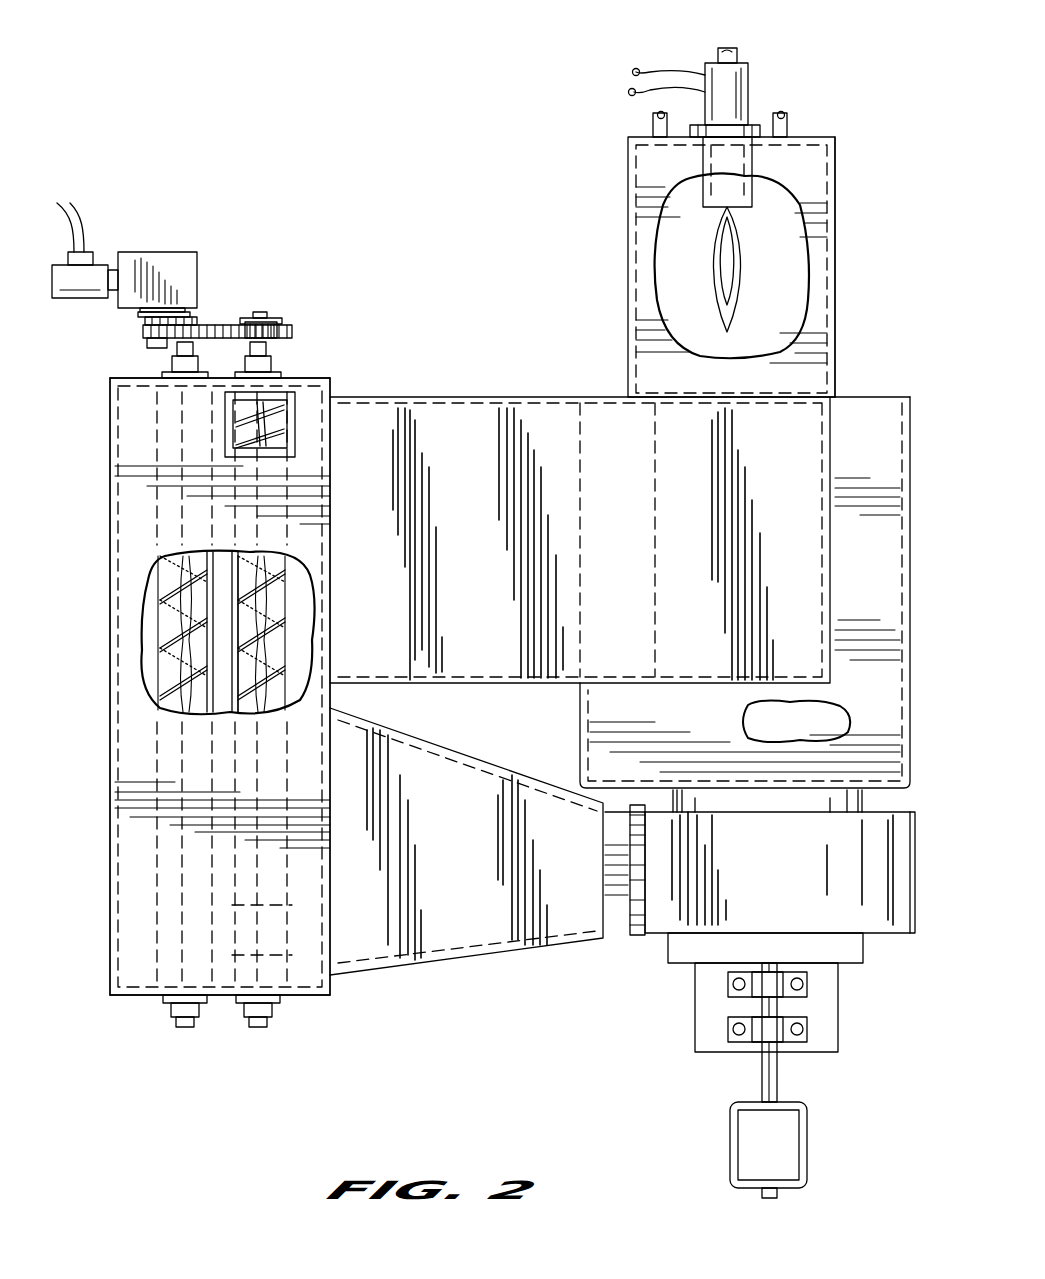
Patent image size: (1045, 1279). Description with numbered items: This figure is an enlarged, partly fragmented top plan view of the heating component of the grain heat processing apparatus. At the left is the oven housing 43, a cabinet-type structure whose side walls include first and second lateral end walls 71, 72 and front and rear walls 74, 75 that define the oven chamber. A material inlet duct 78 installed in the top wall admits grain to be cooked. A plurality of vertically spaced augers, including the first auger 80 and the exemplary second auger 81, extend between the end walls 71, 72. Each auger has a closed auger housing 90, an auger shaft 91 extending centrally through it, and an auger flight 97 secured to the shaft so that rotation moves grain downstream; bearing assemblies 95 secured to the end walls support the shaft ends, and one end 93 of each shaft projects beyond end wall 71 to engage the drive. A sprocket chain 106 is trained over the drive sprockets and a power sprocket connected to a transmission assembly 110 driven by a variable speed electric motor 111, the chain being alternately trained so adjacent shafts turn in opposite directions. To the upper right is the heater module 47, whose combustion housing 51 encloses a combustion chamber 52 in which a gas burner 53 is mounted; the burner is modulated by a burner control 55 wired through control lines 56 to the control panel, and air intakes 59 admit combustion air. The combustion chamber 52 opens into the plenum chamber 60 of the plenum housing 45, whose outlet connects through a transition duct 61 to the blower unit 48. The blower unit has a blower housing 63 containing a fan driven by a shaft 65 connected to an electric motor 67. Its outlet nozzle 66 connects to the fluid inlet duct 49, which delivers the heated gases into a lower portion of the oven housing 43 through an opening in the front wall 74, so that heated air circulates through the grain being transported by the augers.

The oven housing 43 is at (107, 955).
The plenum housing 45 is at (582, 718).
The heater module 47 is at (846, 194).
The blower unit 48 is at (905, 937).
The fluid inlet duct 49 is at (460, 397).
The combustion housing 51 is at (815, 312).
The combustion chamber 52 is at (680, 288).
The gas burner 53 is at (712, 210).
The burner control 55 is at (750, 81).
The control lines 56 is at (658, 72).
The air intakes 59 is at (788, 119).
The plenum chamber 60 is at (796, 722).
The transition duct 61 is at (860, 803).
The blower housing 63 is at (672, 912).
The shaft 65 is at (777, 1077).
The outlet nozzle 66 is at (625, 937).
The electric motor 67 is at (807, 1163).
The first lateral end wall 71 is at (328, 380).
The second lateral end wall 72 is at (300, 997).
The front wall 74 is at (332, 495).
The rear wall 75 is at (108, 467).
The material inlet duct 78 is at (282, 395).
The first auger 80 is at (314, 612).
The second auger 81 is at (183, 634).
The auger housing 90 is at (213, 667).
The auger shaft 91 is at (160, 618).
The auger shaft end 93 is at (262, 312).
The bearing assembly 95 is at (178, 1020).
The auger flight 97 is at (175, 582).
The sprocket chain 106 is at (217, 325).
The transmission assembly 110 is at (163, 252).
The variable speed electric motor 111 is at (100, 268).